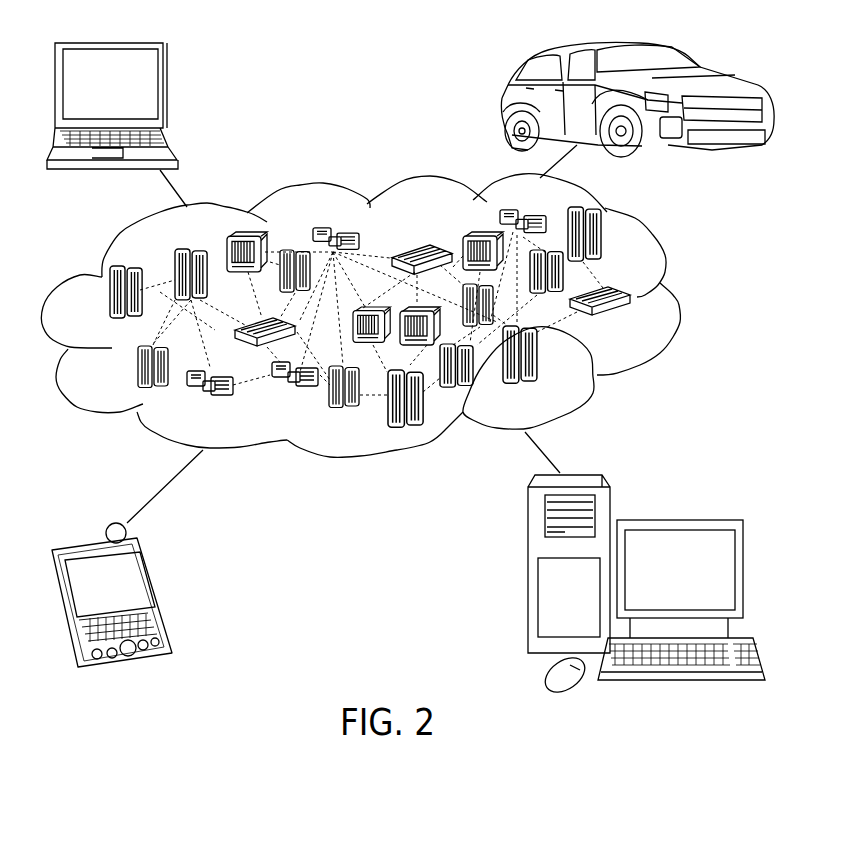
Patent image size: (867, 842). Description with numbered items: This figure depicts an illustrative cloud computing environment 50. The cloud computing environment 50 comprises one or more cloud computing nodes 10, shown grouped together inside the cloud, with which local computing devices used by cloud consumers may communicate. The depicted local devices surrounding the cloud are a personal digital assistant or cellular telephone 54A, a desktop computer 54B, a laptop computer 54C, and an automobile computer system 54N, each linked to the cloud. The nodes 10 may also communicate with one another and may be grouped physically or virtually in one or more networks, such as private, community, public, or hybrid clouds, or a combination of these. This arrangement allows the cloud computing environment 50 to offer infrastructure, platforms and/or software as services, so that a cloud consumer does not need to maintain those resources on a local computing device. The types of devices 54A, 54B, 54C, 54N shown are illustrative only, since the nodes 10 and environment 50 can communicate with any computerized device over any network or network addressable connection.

The cloud computing environment 50 is at (678, 298).
The cloud computing nodes 10 is at (631, 322).
The personal digital assistant or cellular telephone 54A is at (157, 592).
The desktop computer 54B is at (677, 520).
The laptop computer 54C is at (163, 92).
The automobile computer system 54N is at (505, 105).